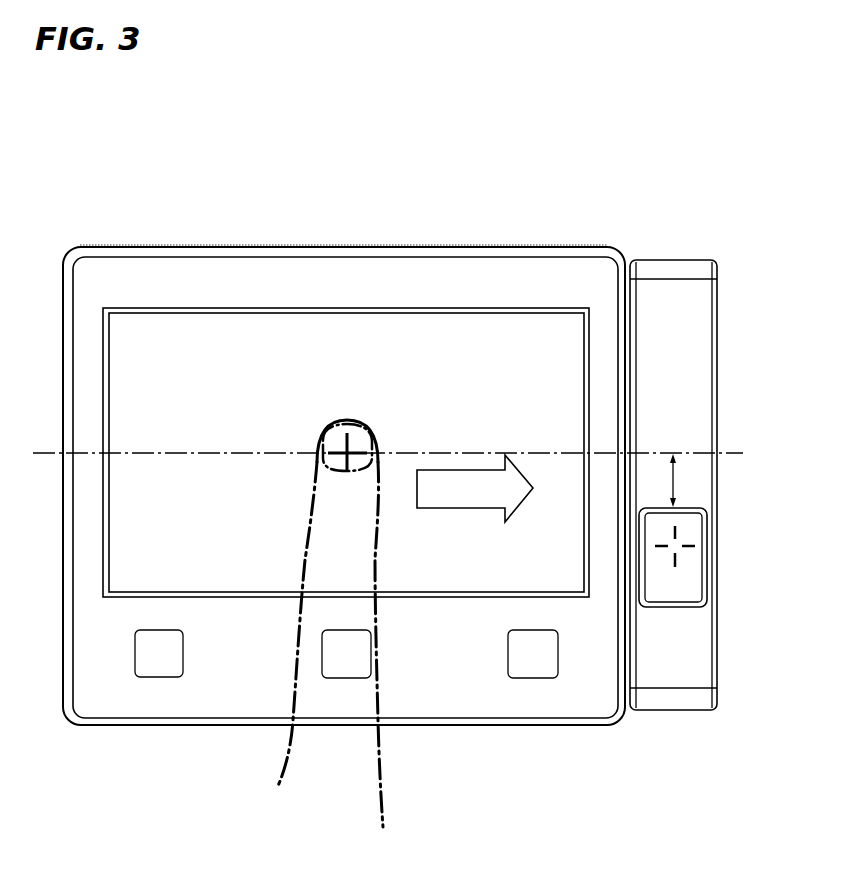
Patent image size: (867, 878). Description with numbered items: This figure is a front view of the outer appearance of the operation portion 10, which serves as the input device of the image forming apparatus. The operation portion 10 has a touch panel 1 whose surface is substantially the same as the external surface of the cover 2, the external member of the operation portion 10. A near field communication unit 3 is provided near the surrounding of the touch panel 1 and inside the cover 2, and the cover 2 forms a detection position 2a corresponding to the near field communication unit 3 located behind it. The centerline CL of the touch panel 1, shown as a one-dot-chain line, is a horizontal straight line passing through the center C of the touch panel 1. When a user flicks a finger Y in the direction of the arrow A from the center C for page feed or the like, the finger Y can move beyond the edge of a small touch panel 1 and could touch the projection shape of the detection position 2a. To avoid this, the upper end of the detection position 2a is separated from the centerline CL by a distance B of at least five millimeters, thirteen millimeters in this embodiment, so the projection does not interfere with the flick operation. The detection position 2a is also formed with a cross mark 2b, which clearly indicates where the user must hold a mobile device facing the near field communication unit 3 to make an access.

The operation portion 10 is at (288, 290).
The touch panel 1 is at (472, 358).
The cover 2 is at (682, 318).
The detection position 2a is at (683, 536).
The near field communication unit 3 is at (673, 557).
The mark 2b is at (688, 549).
The centerline CL is at (697, 452).
The distance B is at (663, 480).
The arrow A is at (475, 488).
The center C is at (352, 449).
The finger Y is at (330, 526).